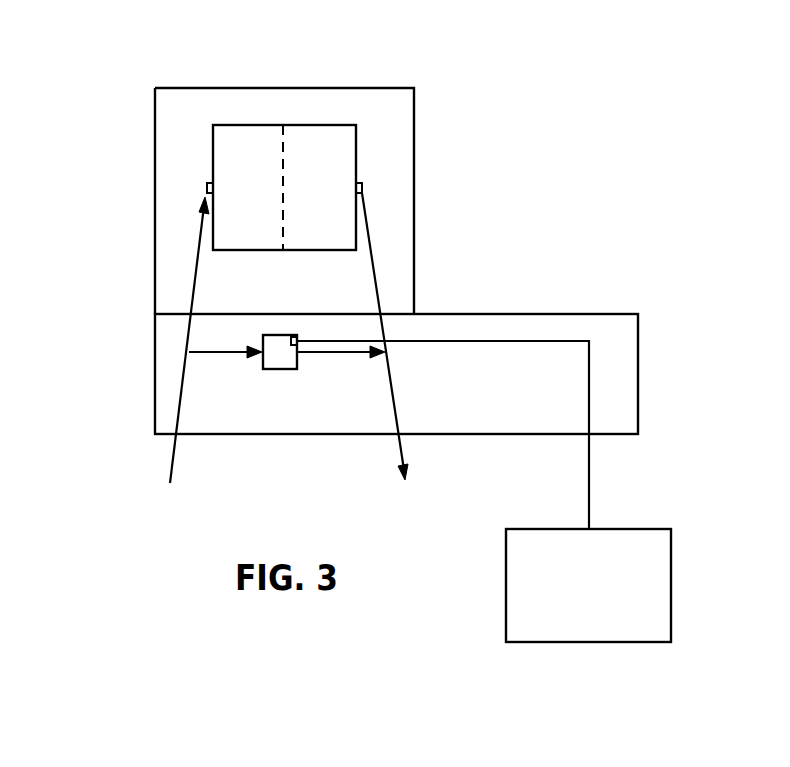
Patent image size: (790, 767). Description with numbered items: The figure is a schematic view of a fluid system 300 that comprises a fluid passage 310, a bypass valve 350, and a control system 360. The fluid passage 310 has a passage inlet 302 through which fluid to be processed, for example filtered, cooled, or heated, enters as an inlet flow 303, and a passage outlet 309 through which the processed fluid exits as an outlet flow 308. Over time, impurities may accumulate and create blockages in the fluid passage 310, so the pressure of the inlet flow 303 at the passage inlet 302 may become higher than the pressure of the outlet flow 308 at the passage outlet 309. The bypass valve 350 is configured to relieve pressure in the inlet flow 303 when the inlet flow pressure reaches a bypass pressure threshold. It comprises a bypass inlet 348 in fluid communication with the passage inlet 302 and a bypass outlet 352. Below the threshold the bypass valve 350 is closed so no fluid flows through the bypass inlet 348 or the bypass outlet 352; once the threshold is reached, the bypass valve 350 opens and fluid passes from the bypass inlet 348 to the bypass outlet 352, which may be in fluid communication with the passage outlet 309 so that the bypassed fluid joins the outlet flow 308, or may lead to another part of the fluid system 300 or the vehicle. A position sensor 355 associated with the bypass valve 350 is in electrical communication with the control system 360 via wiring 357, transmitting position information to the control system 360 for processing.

The fluid system 300 is at (125, 98).
The passage inlet 302 is at (206, 188).
The inlet flow 303 is at (193, 285).
The outlet flow 308 is at (371, 246).
The passage outlet 309 is at (362, 189).
The fluid passage 310 is at (253, 150).
The bypass inlet 348 is at (262, 353).
The bypass valve 350 is at (283, 370).
The bypass outlet 352 is at (298, 355).
The position sensor 355 is at (295, 335).
The wiring 357 is at (505, 341).
The control system 360 is at (506, 585).